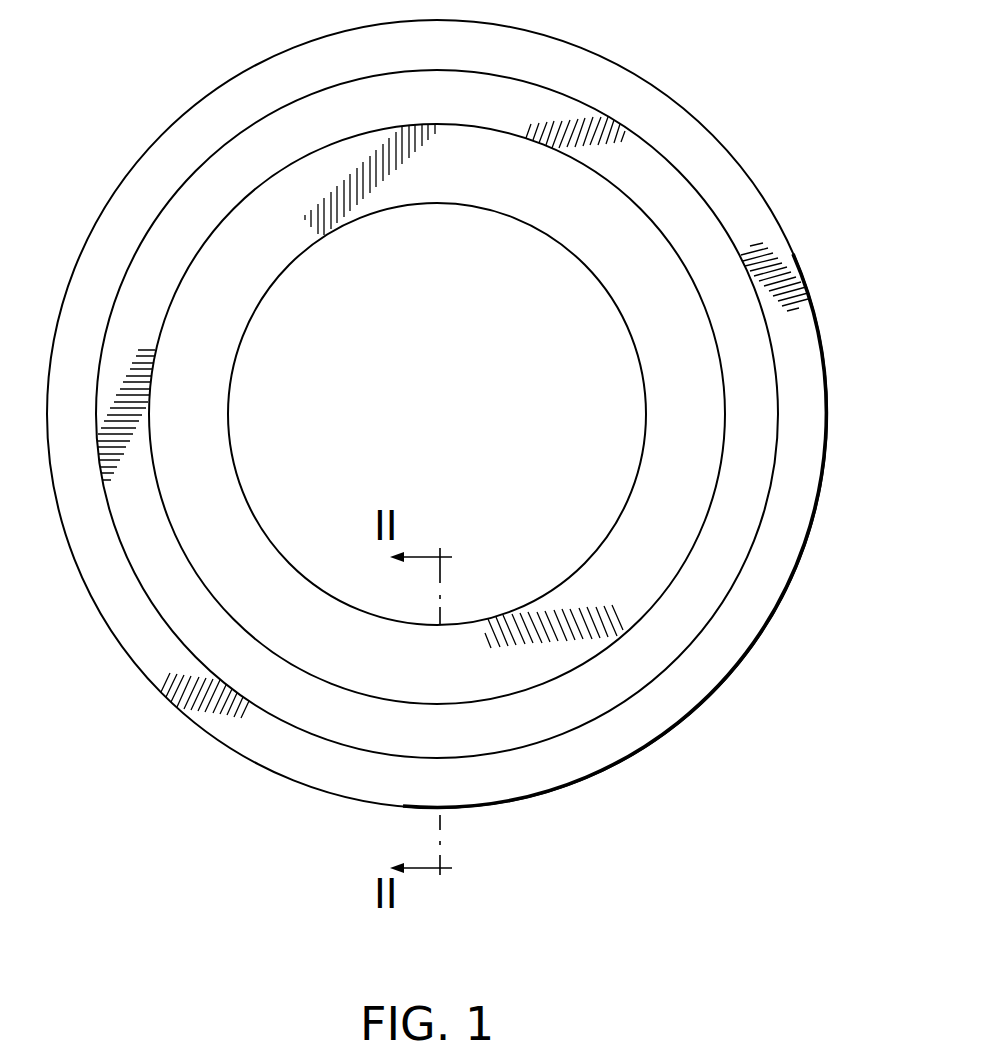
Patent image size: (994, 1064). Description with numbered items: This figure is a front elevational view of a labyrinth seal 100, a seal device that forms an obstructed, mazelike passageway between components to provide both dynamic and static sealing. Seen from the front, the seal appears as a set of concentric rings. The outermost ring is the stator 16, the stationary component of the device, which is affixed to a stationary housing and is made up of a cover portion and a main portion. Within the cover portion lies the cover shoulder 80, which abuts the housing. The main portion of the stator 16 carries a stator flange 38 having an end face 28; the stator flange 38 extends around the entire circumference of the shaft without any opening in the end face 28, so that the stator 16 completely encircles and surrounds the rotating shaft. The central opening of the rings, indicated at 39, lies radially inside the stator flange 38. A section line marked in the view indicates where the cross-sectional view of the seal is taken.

The labyrinth seal 100 is at (762, 117).
The stator 16 is at (738, 667).
The cover shoulder 80 is at (290, 752).
The end face 28 is at (697, 482).
The stator flange 38 is at (245, 568).
The inner bore 39 is at (557, 245).